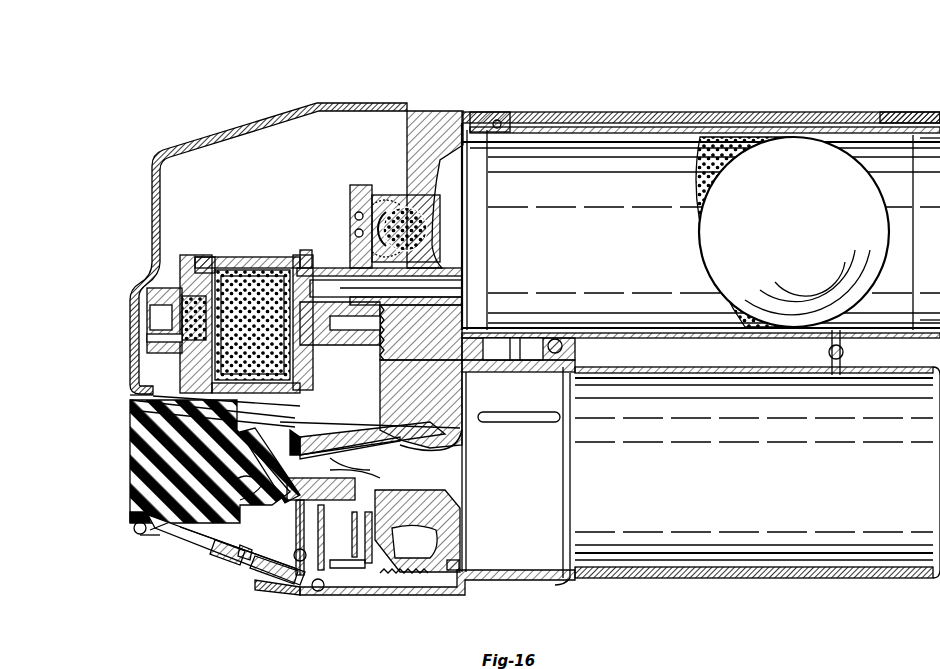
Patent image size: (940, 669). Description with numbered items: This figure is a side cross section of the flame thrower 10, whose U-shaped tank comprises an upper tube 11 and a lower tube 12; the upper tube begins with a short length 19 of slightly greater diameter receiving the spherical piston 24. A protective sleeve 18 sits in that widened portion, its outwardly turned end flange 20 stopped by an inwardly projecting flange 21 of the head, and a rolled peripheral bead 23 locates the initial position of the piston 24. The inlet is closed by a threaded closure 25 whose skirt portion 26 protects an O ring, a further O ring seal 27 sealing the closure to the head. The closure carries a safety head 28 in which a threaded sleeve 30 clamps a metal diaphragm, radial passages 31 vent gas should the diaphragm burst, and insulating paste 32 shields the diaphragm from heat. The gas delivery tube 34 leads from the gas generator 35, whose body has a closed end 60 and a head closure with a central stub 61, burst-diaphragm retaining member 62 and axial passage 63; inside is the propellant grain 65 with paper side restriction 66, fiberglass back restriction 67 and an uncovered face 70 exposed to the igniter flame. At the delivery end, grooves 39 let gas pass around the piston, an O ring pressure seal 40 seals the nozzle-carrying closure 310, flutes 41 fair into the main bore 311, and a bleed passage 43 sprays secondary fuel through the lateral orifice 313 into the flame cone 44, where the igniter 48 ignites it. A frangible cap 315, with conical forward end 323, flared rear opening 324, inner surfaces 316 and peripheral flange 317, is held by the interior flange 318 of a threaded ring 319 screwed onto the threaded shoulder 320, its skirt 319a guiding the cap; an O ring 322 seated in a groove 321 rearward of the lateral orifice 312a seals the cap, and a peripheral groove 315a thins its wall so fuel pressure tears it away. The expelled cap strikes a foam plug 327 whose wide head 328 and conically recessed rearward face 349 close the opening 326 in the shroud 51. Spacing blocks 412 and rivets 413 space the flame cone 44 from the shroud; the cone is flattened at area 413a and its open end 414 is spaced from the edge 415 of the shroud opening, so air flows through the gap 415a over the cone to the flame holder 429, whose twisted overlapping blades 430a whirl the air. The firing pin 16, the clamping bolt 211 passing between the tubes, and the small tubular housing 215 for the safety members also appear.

The flame thrower 10 is at (635, 113).
The upper tube 11 is at (595, 199).
The lower tube 12 is at (780, 472).
The firing pin 16 is at (405, 315).
The protective sleeve 18 is at (560, 127).
The widened inlet end portion 19 is at (598, 127).
The outwardly turned end flange 20 is at (478, 115).
The inwardly projecting flange 21 is at (508, 126).
The rolled peripheral bead 23 is at (865, 112).
The spherical piston 24 is at (772, 199).
The threaded closure 25 is at (470, 156).
The skirt portion 26 is at (490, 188).
The O ring seal 27 is at (458, 110).
The safety head 28 is at (350, 226).
The threaded sleeve 30 is at (418, 224).
The radial passages 31 is at (356, 186).
The insulating paste packing 32 is at (418, 238).
The gas delivery tube 34 is at (463, 286).
The gas generator 35 is at (293, 246).
The grooves 39 is at (548, 412).
The O ring pressure seal 40 is at (460, 562).
The flutes 41 is at (467, 398).
The bleed passage 43 is at (420, 449).
The flame cone 44 is at (186, 540).
The igniter element 48 is at (386, 396).
The shroud 51 is at (275, 580).
The closed end 60 is at (318, 268).
The central stub 61 is at (147, 326).
The burst-diaphragm retaining member 62 is at (150, 340).
The axial passage 63 is at (160, 315).
The gas generating element 65 is at (252, 316).
The side restriction 66 is at (240, 270).
The back restriction 67 is at (208, 268).
The uncovered face 70 is at (303, 262).
The clamping bolt 211 is at (557, 338).
The small tubular housing 215 is at (836, 360).
The nozzle closure 310 is at (414, 541).
The main bore 311 is at (335, 466).
The lateral orifice 312a is at (312, 440).
The lateral orifice 313 is at (330, 450).
The frangible cap 315 is at (285, 430).
The peripheral groove 315a is at (380, 470).
The inner surfaces of cap 316 is at (268, 500).
The peripheral flange 317 is at (330, 565).
The interior flange 318 is at (354, 540).
The threaded ring 319 is at (369, 563).
The skirt 319a is at (298, 536).
The threaded shoulder 320 is at (385, 490).
The exterior peripheral groove 321 is at (321, 489).
The O ring seal 322 is at (300, 506).
The conical forward end 323 is at (252, 412).
The flared rear opening 324 is at (333, 537).
The shroud opening 326 is at (132, 516).
The plug 327 is at (130, 461).
The plug head 328 is at (185, 467).
The rearward face 349 is at (231, 488).
The spacing blocks 412 is at (200, 553).
The rivets 413 is at (235, 566).
The flattened area 413a is at (132, 405).
The open end 414 is at (132, 500).
The opening edge 415 is at (134, 530).
The gap 415a is at (150, 538).
The flame holder member 429 is at (320, 592).
The overlapping blades 430a is at (298, 549).